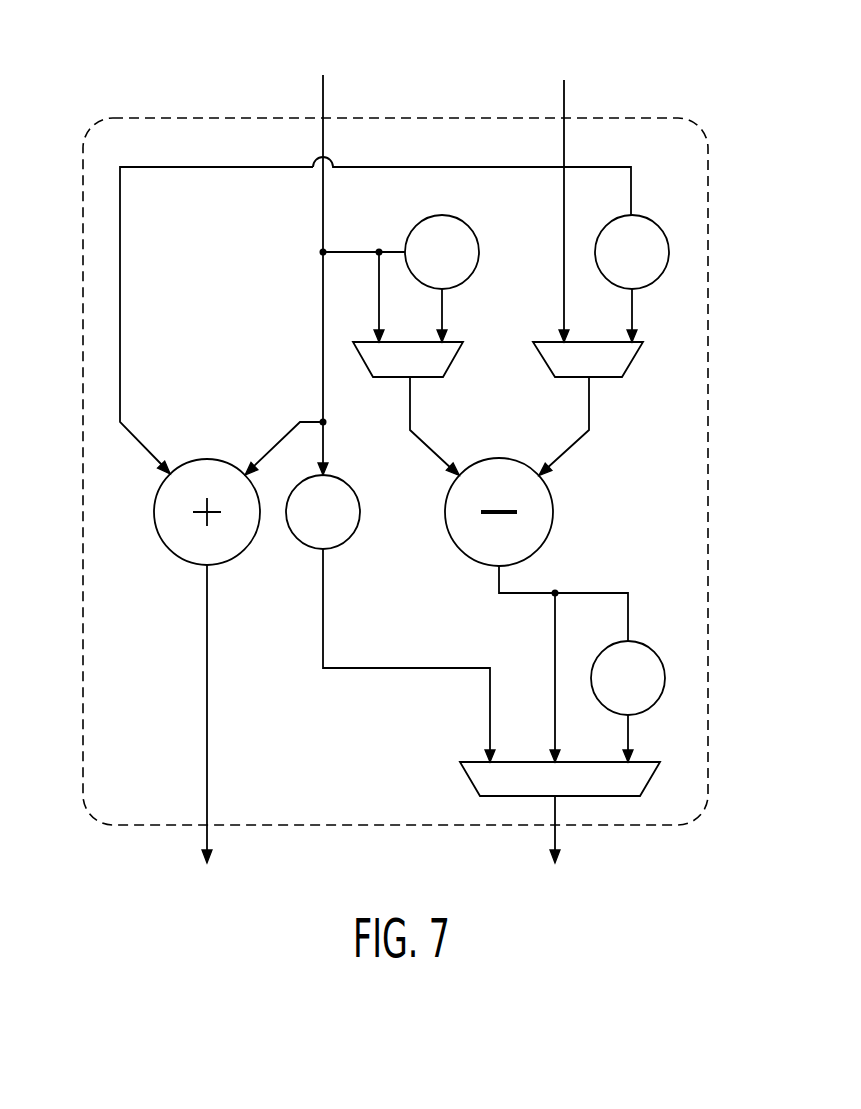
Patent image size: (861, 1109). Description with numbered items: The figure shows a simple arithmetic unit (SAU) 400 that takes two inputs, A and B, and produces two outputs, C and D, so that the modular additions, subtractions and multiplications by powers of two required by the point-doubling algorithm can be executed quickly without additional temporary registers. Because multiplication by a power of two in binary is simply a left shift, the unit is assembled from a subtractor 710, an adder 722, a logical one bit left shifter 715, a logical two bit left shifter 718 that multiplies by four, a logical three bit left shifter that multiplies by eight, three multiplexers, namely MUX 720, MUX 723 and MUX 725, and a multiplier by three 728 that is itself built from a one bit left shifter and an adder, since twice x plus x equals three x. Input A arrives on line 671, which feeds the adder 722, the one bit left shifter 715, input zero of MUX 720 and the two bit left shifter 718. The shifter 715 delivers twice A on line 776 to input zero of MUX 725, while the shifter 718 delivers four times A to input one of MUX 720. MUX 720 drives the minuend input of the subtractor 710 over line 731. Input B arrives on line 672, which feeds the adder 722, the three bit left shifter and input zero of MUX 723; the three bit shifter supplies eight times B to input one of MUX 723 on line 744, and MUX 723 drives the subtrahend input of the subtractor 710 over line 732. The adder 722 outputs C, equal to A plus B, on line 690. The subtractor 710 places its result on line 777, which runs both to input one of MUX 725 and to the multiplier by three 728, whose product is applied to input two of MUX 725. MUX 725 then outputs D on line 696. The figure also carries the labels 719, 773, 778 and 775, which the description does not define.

The simple arithmetic unit 400 is at (115, 118).
The line 671 is at (333, 88).
The line 672 is at (568, 92).
The logical two bit left shifter 718 is at (468, 225).
The multiply-by-8 unit 719 is at (648, 215).
The MUX 723 is at (445, 312).
The MUX 720 is at (447, 378).
The line 744 is at (634, 300).
The second multiplexer 773 is at (617, 383).
The line 732 is at (588, 412).
The line 731 is at (327, 424).
The subtractor 710 is at (555, 516).
The logical one bit left shifter 715 is at (358, 525).
The adder 722 is at (182, 565).
The line 777 is at (533, 593).
The line 776 is at (325, 625).
The multiplier by three 728 is at (663, 666).
The multiplier output line 778 is at (632, 728).
The MUX 725 is at (465, 775).
The line 690 is at (209, 757).
The line 696 is at (558, 838).
The transform block 775 is at (154, 737).